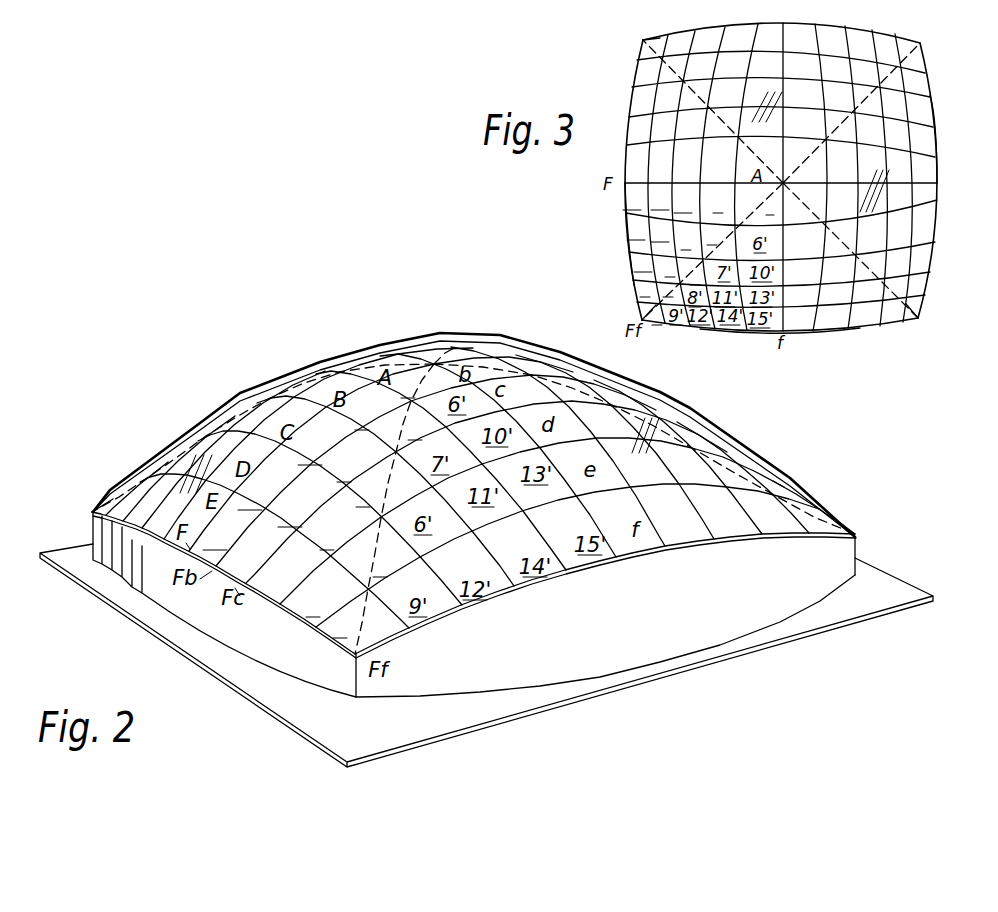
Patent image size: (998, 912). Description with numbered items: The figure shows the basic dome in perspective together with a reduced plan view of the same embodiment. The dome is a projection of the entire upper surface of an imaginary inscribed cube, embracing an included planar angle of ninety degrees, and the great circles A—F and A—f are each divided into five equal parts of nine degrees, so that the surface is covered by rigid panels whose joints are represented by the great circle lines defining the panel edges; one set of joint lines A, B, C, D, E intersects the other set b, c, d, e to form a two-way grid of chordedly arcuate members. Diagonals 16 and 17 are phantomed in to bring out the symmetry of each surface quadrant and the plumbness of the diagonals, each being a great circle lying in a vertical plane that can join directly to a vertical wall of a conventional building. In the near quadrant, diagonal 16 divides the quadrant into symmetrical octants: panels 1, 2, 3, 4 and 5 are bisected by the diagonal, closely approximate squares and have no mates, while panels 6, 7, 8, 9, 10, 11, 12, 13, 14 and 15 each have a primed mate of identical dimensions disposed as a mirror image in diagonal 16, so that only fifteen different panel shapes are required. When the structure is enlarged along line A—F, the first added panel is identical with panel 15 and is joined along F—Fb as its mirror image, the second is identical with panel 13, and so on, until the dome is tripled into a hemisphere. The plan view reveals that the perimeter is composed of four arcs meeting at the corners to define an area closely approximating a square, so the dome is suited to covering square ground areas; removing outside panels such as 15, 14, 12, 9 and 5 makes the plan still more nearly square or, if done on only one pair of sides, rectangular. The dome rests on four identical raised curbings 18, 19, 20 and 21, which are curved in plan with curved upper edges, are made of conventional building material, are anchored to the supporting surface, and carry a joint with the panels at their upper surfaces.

In FIG. 3, the diagonal 16 is at (642, 319).
In FIG. 2, the diagonal 16 is at (432, 366).
In FIG. 3, the diagonal 17 is at (921, 317).
In FIG. 2, the diagonal 17 is at (846, 534).
In FIG. 3, the curbing 18 is at (884, 328).
In FIG. 2, the curbing 18 is at (730, 628).
In FIG. 3, the curbing 19 is at (630, 262).
In FIG. 2, the curbing 19 is at (142, 593).
In FIG. 3, the curbing 20 is at (933, 96).
In FIG. 3, the curbing 21 is at (660, 27).
In FIG. 3, the panel 1 is at (770, 206).
In FIG. 2, the panel 1 is at (407, 388).
In FIG. 3, the panel 2 is at (712, 236).
In FIG. 2, the panel 2 is at (414, 430).
In FIG. 3, the panel 3 is at (695, 276).
In FIG. 2, the panel 3 is at (362, 497).
In FIG. 3, the panel 4 is at (668, 288).
In FIG. 2, the panel 4 is at (379, 567).
In FIG. 3, the panel 5 is at (657, 316).
In FIG. 2, the panel 5 is at (339, 628).
In FIG. 3, the panel 6 is at (718, 204).
In FIG. 2, the panel 6 is at (361, 420).
In FIG. 3, the panel 7 is at (686, 241).
In FIG. 2, the panel 7 is at (344, 472).
In FIG. 3, the panel 8 is at (670, 268).
In FIG. 2, the panel 8 is at (326, 540).
In FIG. 3, the panel 9 is at (645, 288).
In FIG. 2, the panel 9 is at (312, 607).
In FIG. 3, the panel 10 is at (683, 204).
In FIG. 2, the panel 10 is at (310, 455).
In FIG. 3, the panel 11 is at (660, 233).
In FIG. 2, the panel 11 is at (290, 517).
In FIG. 3, the panel 12 is at (643, 263).
In FIG. 2, the panel 12 is at (280, 580).
In FIG. 3, the panel 13 is at (660, 201).
In FIG. 2, the panel 13 is at (250, 500).
In FIG. 3, the panel 14 is at (636, 231).
In FIG. 2, the panel 14 is at (250, 560).
In FIG. 3, the panel 15 is at (632, 201).
In FIG. 2, the panel 15 is at (215, 540).